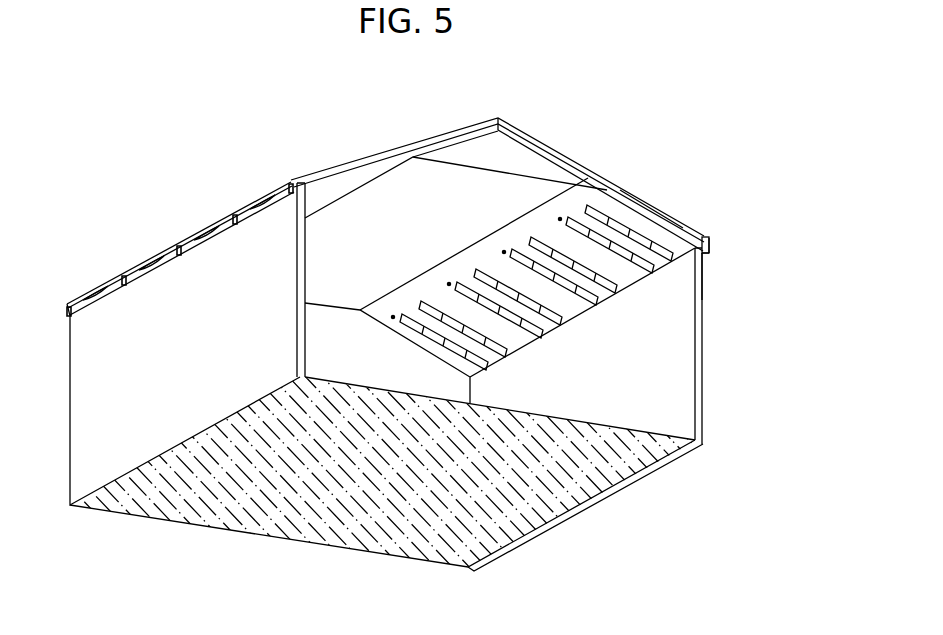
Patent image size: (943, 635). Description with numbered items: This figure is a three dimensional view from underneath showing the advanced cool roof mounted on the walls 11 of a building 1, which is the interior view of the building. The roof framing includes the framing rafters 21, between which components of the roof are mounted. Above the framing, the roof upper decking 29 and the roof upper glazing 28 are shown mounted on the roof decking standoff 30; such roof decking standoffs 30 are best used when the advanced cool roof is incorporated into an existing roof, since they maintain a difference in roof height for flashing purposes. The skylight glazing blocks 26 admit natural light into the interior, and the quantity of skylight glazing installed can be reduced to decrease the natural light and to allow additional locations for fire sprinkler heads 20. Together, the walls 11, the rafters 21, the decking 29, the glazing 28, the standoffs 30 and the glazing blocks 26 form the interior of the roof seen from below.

The building 1 is at (268, 551).
The walls 11 is at (296, 353).
The fire sprinkler heads 20 is at (613, 191).
The framing rafters 21 is at (709, 253).
The skylight glazing blocks 26 is at (710, 245).
The roof upper glazing 28 is at (683, 228).
The roof upper decking 29 is at (210, 224).
The roof decking standoff 30 is at (710, 251).